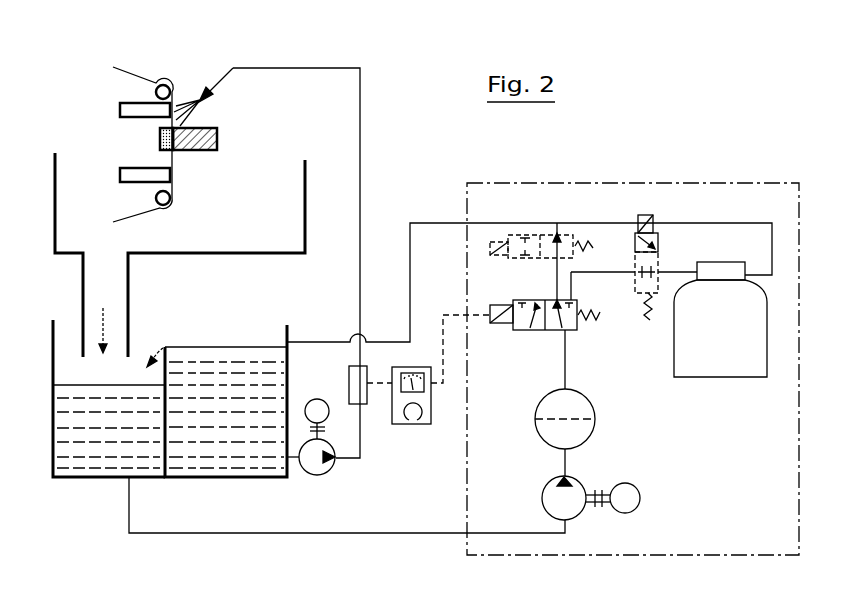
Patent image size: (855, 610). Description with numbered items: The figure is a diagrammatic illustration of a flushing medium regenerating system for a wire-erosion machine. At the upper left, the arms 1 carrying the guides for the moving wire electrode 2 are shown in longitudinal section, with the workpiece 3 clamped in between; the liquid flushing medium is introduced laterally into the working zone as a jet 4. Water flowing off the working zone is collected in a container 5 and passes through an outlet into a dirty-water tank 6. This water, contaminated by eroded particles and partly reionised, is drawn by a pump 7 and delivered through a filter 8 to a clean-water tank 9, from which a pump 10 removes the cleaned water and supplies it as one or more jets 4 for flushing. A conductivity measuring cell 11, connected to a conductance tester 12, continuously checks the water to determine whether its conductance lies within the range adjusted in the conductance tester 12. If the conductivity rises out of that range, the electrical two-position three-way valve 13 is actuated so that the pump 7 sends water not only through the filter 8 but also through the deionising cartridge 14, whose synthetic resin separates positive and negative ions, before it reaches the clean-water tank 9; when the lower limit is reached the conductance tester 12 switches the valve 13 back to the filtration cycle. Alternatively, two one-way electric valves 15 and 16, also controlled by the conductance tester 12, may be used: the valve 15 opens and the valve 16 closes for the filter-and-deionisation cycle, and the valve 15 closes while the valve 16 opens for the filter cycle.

The arms 1 is at (120, 173).
The wire electrode 2 is at (110, 68).
The workpiece 3 is at (216, 144).
The jet 4 is at (222, 80).
The container 5 is at (305, 203).
The dirty-water tank 6 is at (109, 398).
The pump 7 is at (591, 498).
The filter 8 is at (565, 419).
The clean-water tank 9 is at (217, 401).
The pump 10 is at (316, 452).
The conductivity measuring cell 11 is at (352, 388).
The conductance tester 12 is at (412, 422).
The electrical two-position three-way valve 13 is at (543, 331).
The deionising cartridge 14 is at (720, 319).
The one-way electric valve 15 is at (660, 245).
The one-way electric valve 16 is at (526, 259).